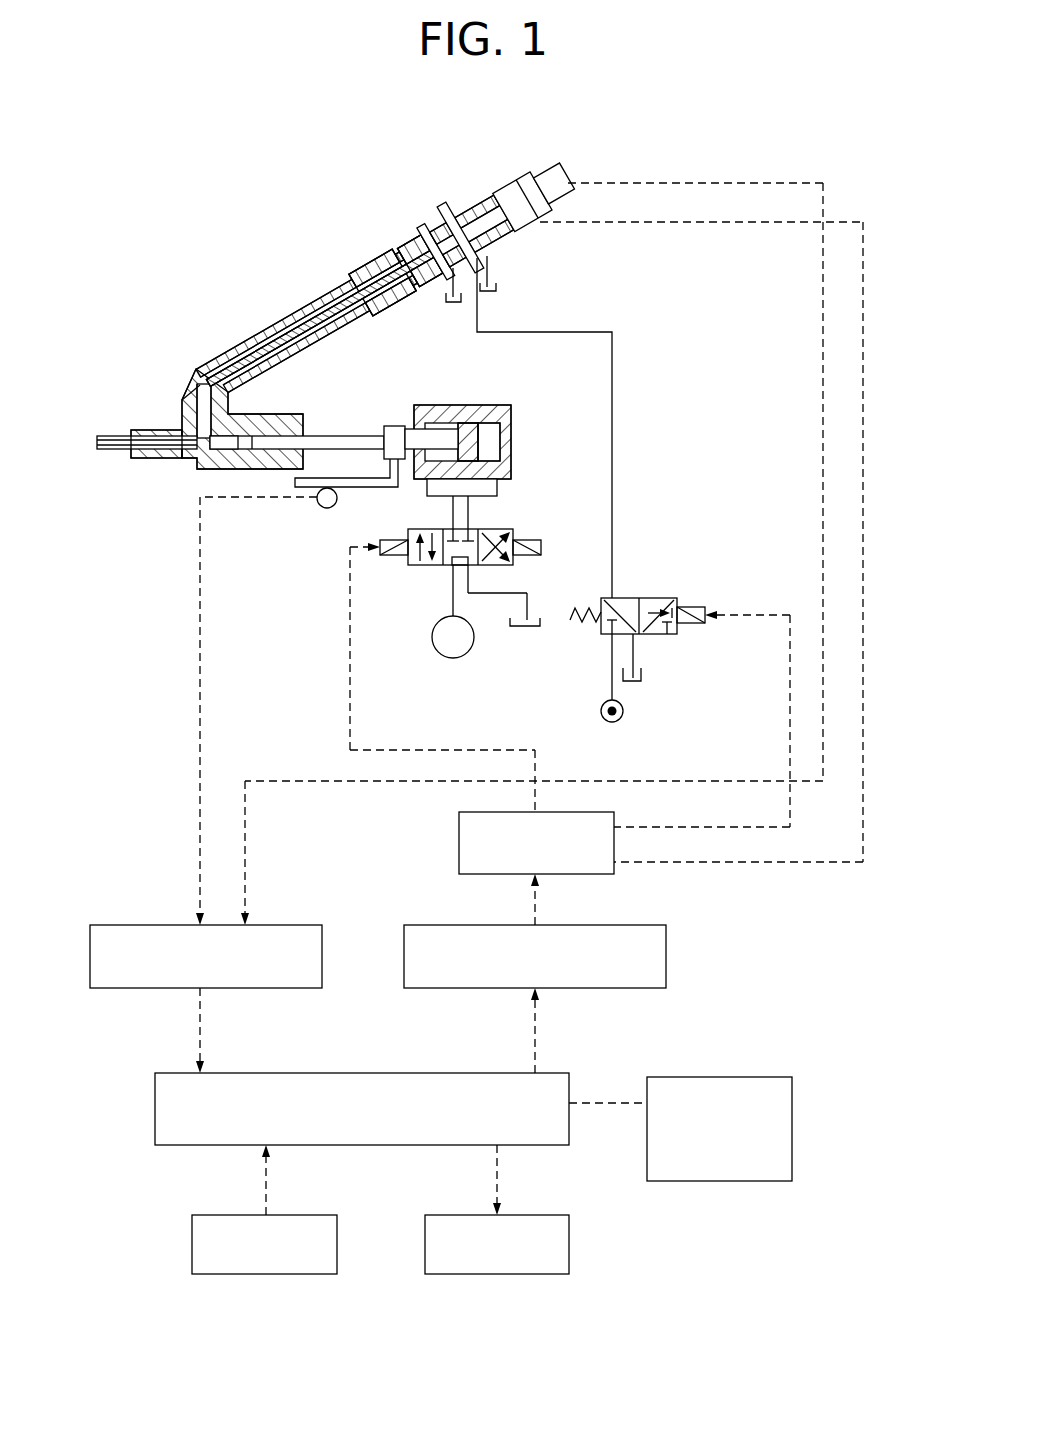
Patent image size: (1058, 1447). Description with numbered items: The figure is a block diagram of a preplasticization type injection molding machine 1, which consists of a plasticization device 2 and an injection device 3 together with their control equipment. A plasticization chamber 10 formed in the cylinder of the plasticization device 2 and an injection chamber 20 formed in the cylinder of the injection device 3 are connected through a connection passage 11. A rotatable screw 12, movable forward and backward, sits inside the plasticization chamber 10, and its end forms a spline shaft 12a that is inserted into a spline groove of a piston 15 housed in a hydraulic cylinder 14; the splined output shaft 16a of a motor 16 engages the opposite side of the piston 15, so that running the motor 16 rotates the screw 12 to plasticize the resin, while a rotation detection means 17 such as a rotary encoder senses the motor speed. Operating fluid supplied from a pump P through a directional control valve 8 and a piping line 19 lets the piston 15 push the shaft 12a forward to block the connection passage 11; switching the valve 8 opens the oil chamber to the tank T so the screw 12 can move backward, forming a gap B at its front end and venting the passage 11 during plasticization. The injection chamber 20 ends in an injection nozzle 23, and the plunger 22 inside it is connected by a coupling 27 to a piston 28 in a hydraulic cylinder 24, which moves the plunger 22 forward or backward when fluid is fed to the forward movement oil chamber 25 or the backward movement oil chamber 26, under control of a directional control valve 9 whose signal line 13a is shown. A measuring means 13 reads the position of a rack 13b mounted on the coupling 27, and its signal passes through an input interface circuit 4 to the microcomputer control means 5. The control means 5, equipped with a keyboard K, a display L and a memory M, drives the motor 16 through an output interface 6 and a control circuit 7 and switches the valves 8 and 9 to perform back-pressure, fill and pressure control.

The preplasticization type injection molding machine 1 is at (303, 186).
The plasticization device 2 is at (270, 298).
The injection device 3 is at (344, 382).
The input interface circuit 4 is at (122, 925).
The microcomputer control means 5 is at (155, 1098).
The output interface 6 is at (404, 940).
The control circuit 7 is at (459, 845).
The directional control valve 8 is at (648, 598).
The directional control valve 9 is at (488, 529).
The plasticization chamber 10 is at (250, 338).
The connection passage 11 is at (192, 386).
The screw 12 is at (338, 308).
The shaft 12a is at (368, 262).
The measuring means 13 is at (318, 501).
The sensor signal line 13a is at (418, 673).
The rack 13b is at (358, 487).
The hydraulic cylinder 14 is at (412, 242).
The piston 15 is at (424, 228).
The motor 16 is at (474, 210).
The output shaft 16a is at (446, 208).
The rotation detection means 17 is at (515, 188).
The piping line 19 is at (605, 332).
The injection chamber 20 is at (220, 462).
The plunger 22 is at (345, 436).
The injection nozzle 23 is at (130, 434).
The hydraulic cylinder 24 is at (484, 410).
The forward movement oil chamber 25 is at (503, 440).
The backward movement oil chamber 26 is at (442, 405).
The coupling 27 is at (398, 428).
The piston 28 is at (478, 452).
The gap B is at (200, 383).
The tank T is at (455, 303).
The pump P is at (453, 611).
The keyboard K is at (192, 1240).
The display L is at (570, 1242).
The memory M is at (770, 1077).